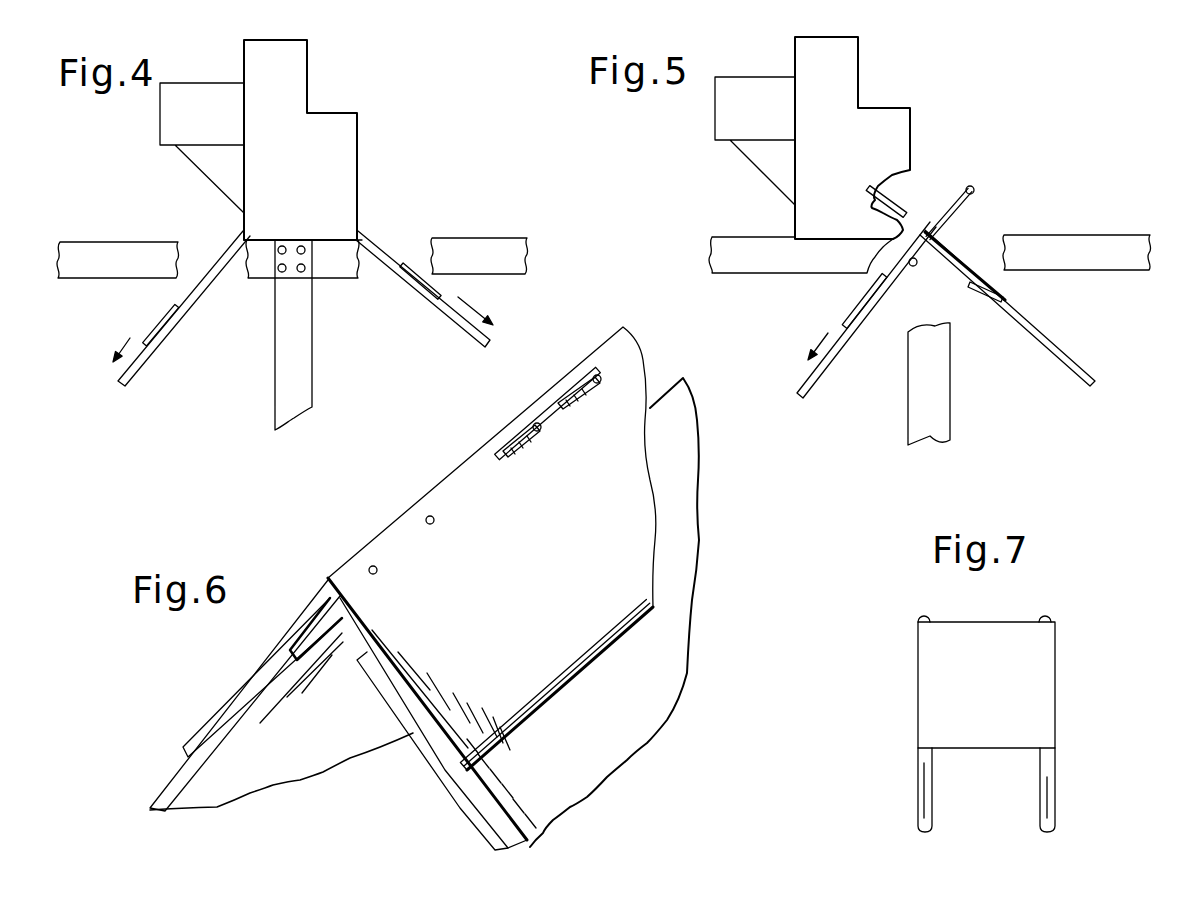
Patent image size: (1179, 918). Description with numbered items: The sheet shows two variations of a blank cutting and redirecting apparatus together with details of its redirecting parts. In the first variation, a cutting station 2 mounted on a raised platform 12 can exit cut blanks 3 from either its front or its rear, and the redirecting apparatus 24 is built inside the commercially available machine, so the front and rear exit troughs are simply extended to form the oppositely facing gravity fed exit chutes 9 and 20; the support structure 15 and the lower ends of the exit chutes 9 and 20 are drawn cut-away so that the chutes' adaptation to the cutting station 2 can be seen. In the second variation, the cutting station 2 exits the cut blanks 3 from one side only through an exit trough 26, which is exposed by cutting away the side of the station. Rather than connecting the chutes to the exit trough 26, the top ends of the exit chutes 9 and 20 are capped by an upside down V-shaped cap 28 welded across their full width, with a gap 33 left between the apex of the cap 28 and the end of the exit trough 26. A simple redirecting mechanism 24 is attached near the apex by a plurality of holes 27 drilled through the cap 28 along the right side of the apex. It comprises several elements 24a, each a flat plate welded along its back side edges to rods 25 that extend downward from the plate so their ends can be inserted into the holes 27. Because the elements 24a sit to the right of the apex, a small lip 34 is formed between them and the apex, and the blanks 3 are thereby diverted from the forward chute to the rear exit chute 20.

In FIG. 4, the cutting station 2 is at (318, 83).
In FIG. 5, the cutting station 2 is at (880, 69).
In FIG. 4, the cut blanks 3 is at (157, 318).
In FIG. 5, the cut blanks 3 is at (858, 303).
In FIG. 4, the exit chute 9 is at (446, 318).
In FIG. 5, the exit chute 9 is at (1048, 355).
In FIG. 6, the exit chute 9 is at (447, 790).
In FIG. 4, the raised platform 12 is at (488, 238).
In FIG. 5, the raised platform 12 is at (1068, 235).
In FIG. 4, the support structure 15 is at (92, 270).
In FIG. 5, the support structure 15 is at (768, 264).
In FIG. 4, the exit chute 20 is at (170, 326).
In FIG. 5, the exit chute 20 is at (850, 348).
In FIG. 6, the exit chute 20 is at (208, 787).
In FIG. 4, the redirecting mechanism 24 is at (320, 202).
In FIG. 5, the redirecting mechanism 24 is at (963, 185).
In FIG. 6, the element 24a is at (563, 392).
In FIG. 7, the element 24a is at (1003, 684).
In FIG. 5, the rods 25 is at (915, 267).
In FIG. 6, the rods 25 is at (585, 390).
In FIG. 7, the rods 25 is at (1040, 787).
In FIG. 5, the exit trough 26 is at (912, 172).
In FIG. 6, the holes 27 is at (378, 570).
In FIG. 5, the cap 28 is at (955, 243).
In FIG. 6, the cap 28 is at (310, 600).
In FIG. 5, the gap 33 is at (927, 204).
In FIG. 5, the lip 34 is at (935, 208).
In FIG. 6, the lip 34 is at (515, 415).